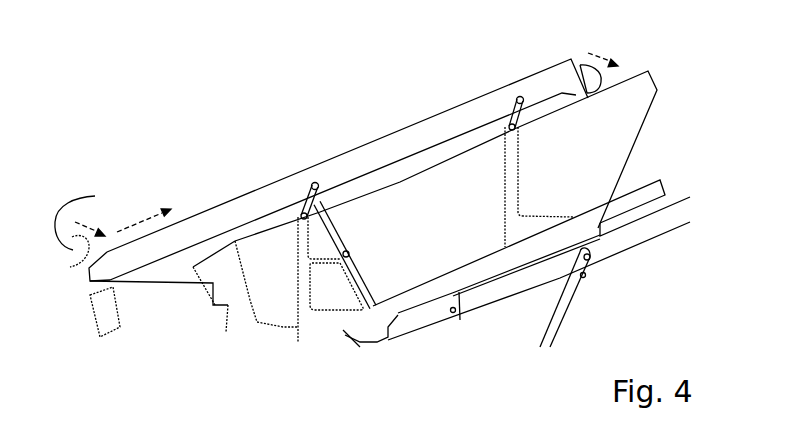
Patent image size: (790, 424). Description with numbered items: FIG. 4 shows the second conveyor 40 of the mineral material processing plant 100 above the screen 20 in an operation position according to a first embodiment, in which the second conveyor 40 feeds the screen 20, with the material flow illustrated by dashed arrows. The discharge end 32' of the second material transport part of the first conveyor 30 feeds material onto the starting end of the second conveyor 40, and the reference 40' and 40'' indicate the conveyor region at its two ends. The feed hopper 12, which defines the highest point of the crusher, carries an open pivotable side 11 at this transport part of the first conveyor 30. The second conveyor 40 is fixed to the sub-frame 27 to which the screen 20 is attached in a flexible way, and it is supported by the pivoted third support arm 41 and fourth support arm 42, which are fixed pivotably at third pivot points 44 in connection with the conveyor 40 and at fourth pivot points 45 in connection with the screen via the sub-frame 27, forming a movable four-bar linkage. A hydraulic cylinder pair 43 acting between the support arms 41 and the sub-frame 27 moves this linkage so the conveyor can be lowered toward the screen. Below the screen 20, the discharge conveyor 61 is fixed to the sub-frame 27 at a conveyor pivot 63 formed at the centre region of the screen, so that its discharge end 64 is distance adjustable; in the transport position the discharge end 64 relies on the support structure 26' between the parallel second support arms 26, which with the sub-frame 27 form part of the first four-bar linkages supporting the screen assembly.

The mineral material processing plant 100 is at (215, 107).
The first conveyor 30 is at (65, 170).
The discharge end of the first conveyor 32' is at (113, 215).
The cover flap in first position 40' is at (66, 295).
The open pivotable side 11 is at (103, 310).
The feed hopper 12 is at (182, 317).
The second conveyor 40 is at (338, 170).
The cover flap in second position 40'' is at (581, 48).
The screen 20 is at (676, 70).
The third support arm 41 is at (308, 200).
The fourth support arm 42 is at (517, 108).
The hydraulic cylinder pair 43 is at (340, 222).
The third pivot points 44 is at (315, 186).
The fourth pivot points 45 is at (304, 216).
The discharge end of the discharge conveyor 64 is at (663, 232).
The discharge conveyor 61 is at (513, 290).
The conveyor pivot 63 is at (460, 317).
The sub-frame 27 is at (352, 343).
The second support arms 26 is at (579, 298).
The support structure 26' is at (615, 301).